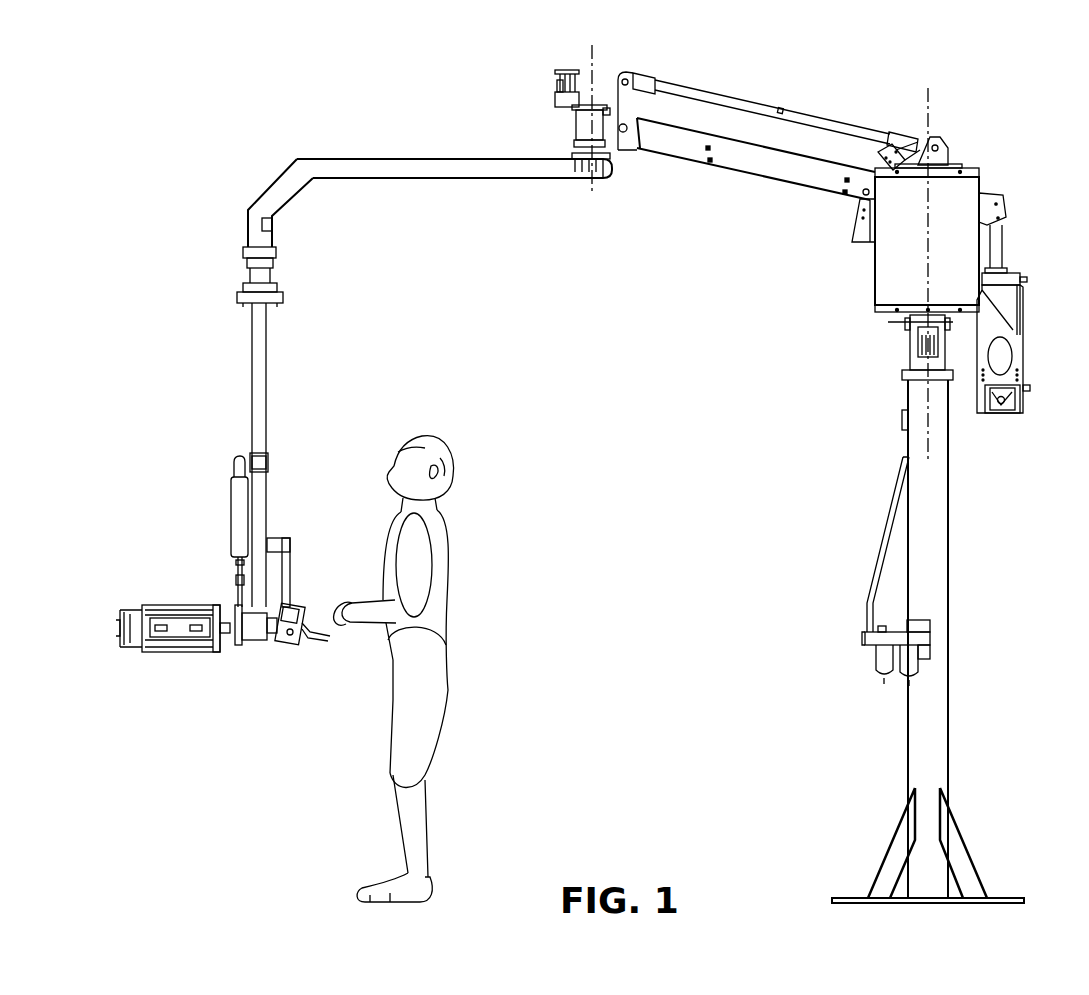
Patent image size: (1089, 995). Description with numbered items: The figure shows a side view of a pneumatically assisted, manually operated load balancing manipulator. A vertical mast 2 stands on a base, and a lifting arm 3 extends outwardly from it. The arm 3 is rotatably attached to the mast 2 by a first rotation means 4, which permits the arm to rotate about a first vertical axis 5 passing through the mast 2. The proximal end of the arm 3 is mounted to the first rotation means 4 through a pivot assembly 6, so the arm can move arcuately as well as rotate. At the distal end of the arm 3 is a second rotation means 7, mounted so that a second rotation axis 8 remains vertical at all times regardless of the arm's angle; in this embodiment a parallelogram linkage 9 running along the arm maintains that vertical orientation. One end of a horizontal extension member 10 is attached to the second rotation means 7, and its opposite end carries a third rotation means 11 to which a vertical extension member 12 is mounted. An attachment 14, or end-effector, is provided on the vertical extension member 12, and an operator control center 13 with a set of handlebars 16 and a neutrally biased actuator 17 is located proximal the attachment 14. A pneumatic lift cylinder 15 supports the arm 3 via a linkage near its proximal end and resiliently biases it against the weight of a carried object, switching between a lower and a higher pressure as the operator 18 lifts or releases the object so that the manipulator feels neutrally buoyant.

The vertical mast 2 is at (948, 718).
The arm 3 is at (758, 180).
The first rotation means 4 is at (910, 357).
The first vertical axis 5 is at (932, 110).
The pivot assembly 6 is at (863, 222).
The second rotation means 7 is at (576, 128).
The second rotation axis 8 is at (590, 205).
The parallelogram linkage 9 is at (762, 105).
The horizontal extension member 10 is at (467, 180).
The third rotation means 11 is at (272, 272).
The vertical extension member 12 is at (270, 400).
The operator control center 13 is at (292, 590).
The attachment 14 is at (152, 492).
The pneumatic lift cylinder 15 is at (1020, 299).
The handlebars 16 is at (322, 642).
The neutrally biased actuator 17 is at (280, 640).
The operator 18 is at (443, 628).